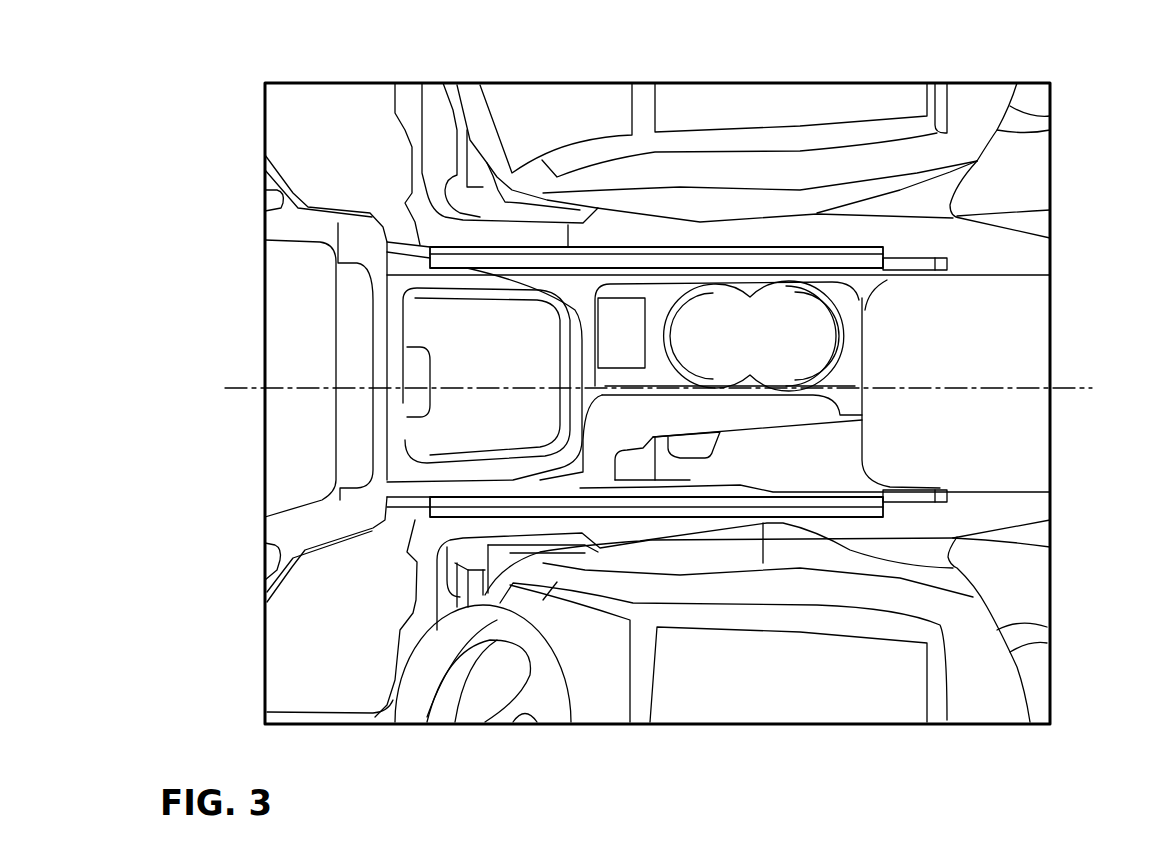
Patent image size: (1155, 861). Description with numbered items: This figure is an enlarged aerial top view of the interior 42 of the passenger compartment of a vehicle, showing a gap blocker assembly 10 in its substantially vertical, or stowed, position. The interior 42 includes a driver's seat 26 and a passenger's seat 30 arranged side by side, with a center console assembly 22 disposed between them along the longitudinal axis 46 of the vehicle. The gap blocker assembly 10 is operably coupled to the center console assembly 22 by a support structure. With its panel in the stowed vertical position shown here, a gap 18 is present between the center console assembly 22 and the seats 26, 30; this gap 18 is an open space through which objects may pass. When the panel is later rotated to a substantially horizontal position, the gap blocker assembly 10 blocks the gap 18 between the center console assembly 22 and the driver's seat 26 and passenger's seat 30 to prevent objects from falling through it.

The gap blocker assembly 10 is at (850, 246).
The gap 18 is at (884, 240).
The center console assembly 22 is at (857, 288).
The driver's seat 26 is at (757, 677).
The passenger's seat 30 is at (740, 105).
The interior 42 is at (221, 152).
The longitudinal axis 46 is at (1066, 388).